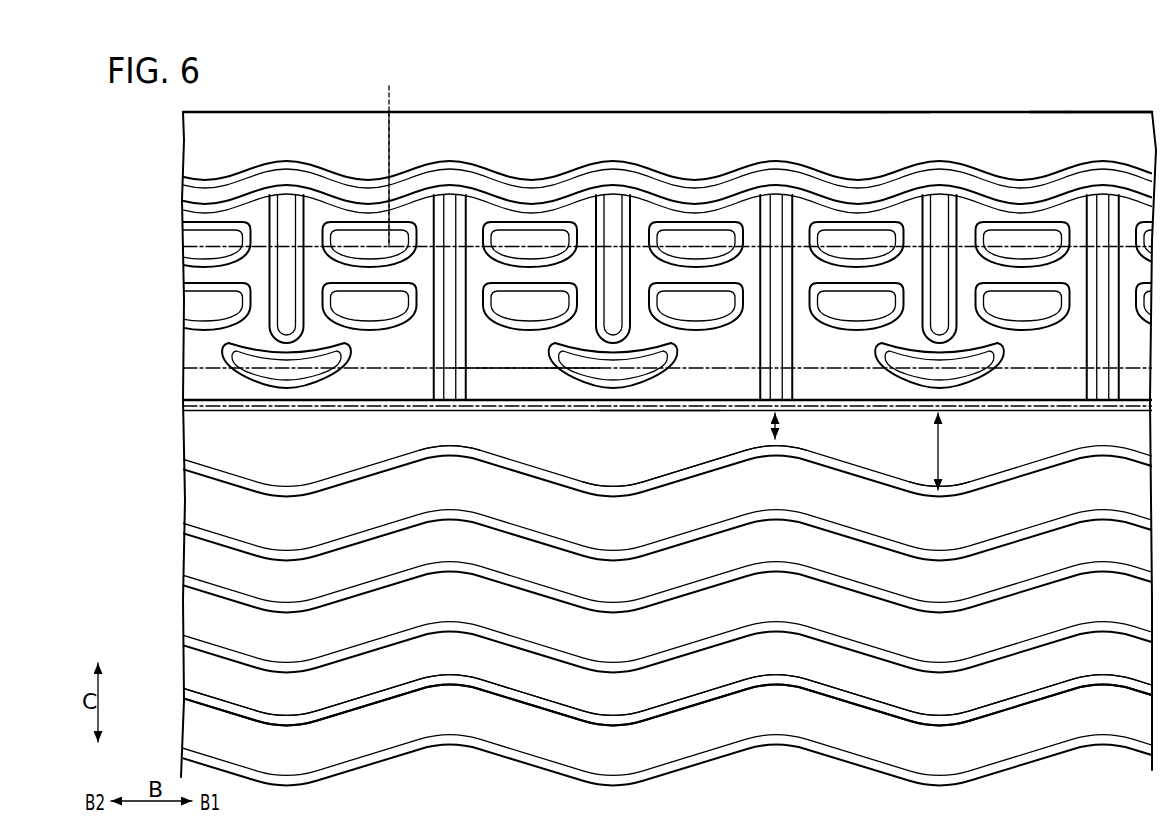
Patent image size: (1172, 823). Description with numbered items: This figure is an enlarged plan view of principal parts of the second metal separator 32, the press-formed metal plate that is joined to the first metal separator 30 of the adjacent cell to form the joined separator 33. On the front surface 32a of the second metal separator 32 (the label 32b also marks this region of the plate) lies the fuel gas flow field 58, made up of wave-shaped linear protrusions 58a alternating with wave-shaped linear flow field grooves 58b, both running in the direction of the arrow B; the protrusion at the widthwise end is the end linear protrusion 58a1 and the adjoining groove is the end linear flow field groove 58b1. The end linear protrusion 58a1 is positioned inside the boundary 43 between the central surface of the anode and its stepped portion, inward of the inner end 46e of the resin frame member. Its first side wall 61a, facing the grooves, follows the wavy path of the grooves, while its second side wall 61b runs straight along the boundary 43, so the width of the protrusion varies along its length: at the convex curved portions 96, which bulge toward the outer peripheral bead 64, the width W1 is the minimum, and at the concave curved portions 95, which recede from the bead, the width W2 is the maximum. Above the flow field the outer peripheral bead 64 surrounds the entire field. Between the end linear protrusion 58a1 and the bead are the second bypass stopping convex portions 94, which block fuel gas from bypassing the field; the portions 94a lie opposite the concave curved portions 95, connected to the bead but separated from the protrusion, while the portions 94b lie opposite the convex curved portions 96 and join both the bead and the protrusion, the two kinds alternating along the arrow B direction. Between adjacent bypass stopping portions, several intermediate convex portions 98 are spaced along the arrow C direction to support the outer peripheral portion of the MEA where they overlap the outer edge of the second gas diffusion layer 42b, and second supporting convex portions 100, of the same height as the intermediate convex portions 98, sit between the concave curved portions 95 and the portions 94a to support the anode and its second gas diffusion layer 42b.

The first metal separator 30 is at (1083, 110).
The second metal separator 32 is at (1048, 110).
The front surface 32a is at (862, 130).
The tread portion 32b is at (902, 132).
The joined separator 33 is at (291, 83).
The second gas diffusion layer 42b is at (427, 154).
The boundary 43 is at (303, 404).
The inner end 46e is at (517, 368).
The fuel gas flow field 58 is at (858, 675).
The linear protrusions 58a is at (867, 567).
The end linear protrusions 58a1 is at (997, 460).
The linear flow field grooves 58b is at (827, 612).
The end linear flow field grooves 58b1 is at (857, 507).
The first side walls 61a is at (673, 474).
The second side walls 61b is at (663, 411).
The outer peripheral bead 64 is at (890, 193).
The second bypass stopping convex portions 94 is at (286, 203).
The second bypass stopping convex portions 94a is at (612, 203).
The second bypass stopping convex portions 94b is at (449, 203).
The concave curved portions 95 is at (597, 462).
The convex curved portions 96 is at (438, 427).
The intermediate convex portions 98 is at (543, 307).
The second supporting convex portions 100 is at (665, 353).
The width dimension W1 is at (790, 426).
The width dimension W2 is at (951, 451).